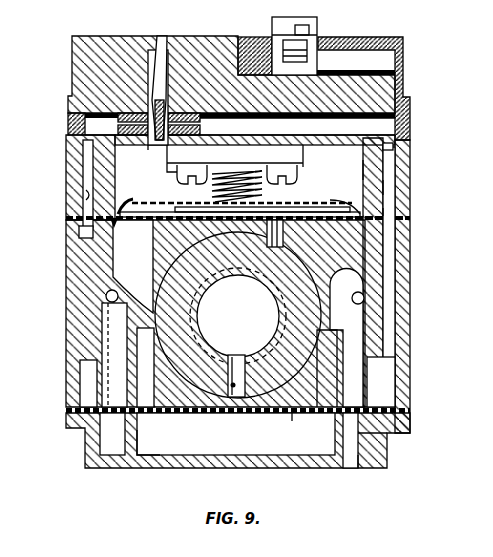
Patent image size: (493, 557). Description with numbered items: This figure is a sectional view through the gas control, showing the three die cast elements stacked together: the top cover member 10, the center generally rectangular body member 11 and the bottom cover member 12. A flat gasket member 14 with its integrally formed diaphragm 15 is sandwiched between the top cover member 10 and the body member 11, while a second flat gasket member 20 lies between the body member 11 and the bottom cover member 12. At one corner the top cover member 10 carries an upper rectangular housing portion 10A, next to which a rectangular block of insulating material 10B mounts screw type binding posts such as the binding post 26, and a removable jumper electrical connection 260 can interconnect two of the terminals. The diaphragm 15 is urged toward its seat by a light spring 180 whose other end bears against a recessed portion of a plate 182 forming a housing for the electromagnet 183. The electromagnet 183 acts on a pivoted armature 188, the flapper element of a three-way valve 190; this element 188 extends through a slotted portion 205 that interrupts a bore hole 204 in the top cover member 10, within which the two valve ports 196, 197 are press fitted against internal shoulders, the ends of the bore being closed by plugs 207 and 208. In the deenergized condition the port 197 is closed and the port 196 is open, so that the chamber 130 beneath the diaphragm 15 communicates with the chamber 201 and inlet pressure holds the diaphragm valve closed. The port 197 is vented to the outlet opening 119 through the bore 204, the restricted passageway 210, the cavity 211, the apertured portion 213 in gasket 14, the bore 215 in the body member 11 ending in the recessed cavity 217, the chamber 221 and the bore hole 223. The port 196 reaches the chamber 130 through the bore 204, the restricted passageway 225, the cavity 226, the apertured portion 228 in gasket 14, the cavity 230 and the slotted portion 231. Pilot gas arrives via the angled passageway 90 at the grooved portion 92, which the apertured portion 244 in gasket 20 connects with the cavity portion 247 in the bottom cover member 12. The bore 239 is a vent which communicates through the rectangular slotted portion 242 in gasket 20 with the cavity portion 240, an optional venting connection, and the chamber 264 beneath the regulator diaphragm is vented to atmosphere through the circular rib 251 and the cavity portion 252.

The upper rectangular housing portion 10A is at (80, 78).
The rectangular block of insulating material 10B is at (404, 45).
The top cover member 10 is at (66, 169).
The center body member 11 is at (76, 308).
The bottom cover member 12 is at (87, 450).
The flat gasket member 14 is at (396, 220).
The diaphragm 15 is at (310, 200).
The flat gasket member 20 is at (168, 442).
The electrical binding post 26 is at (309, 32).
The angled bore hole 90 is at (355, 271).
The grooved portion 92 is at (340, 356).
The outlet opening 119 is at (266, 294).
The chamber 130 is at (370, 246).
The spring 180 is at (230, 172).
The plate 182 is at (301, 160).
The electromagnet 183 is at (190, 158).
The pivoted armature 188 is at (166, 98).
The three-way valve 190 is at (148, 148).
The valve port 196 is at (131, 108).
The valve port 197 is at (181, 116).
The chamber 201 is at (367, 170).
The bore hole 204 is at (98, 38).
The slotted portion 205 is at (152, 48).
The plug 207 is at (68, 122).
The plug 208 is at (411, 124).
The restricted passageway 210 is at (395, 147).
The cavity 211 is at (390, 186).
The apertured portion 213 is at (386, 212).
The bore 215 is at (392, 300).
The recessed cavity 217 is at (393, 378).
The chamber 221 is at (292, 416).
The bore hole 223 is at (236, 365).
The restricted passageway 225 is at (87, 143).
The cavity 226 is at (85, 195).
The apertured portion 228 is at (86, 216).
The cavity 230 is at (85, 232).
The slotted portion 231 is at (113, 228).
The bore 239 is at (106, 338).
The cavity portion 240 is at (88, 390).
The rectangular slotted portion 242 is at (128, 408).
The apertured portion 244 is at (349, 445).
The cavity portion 247 is at (366, 456).
The circular rib 251 is at (138, 432).
The cavity portion 252 is at (111, 450).
The jumper electrical connection 260 is at (274, 23).
The chamber 264 is at (236, 434).